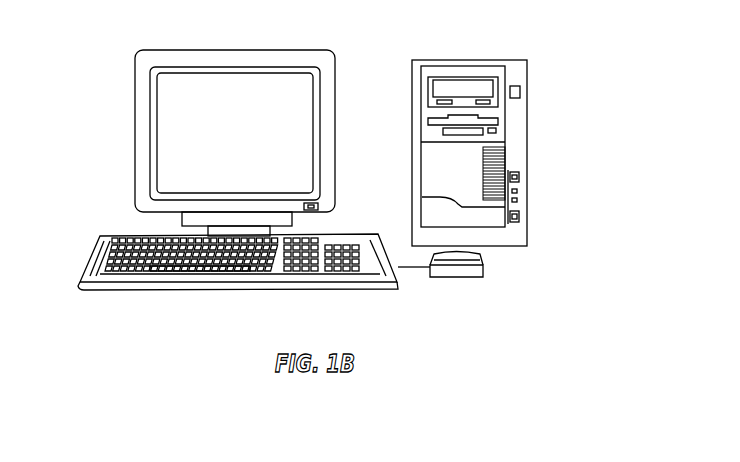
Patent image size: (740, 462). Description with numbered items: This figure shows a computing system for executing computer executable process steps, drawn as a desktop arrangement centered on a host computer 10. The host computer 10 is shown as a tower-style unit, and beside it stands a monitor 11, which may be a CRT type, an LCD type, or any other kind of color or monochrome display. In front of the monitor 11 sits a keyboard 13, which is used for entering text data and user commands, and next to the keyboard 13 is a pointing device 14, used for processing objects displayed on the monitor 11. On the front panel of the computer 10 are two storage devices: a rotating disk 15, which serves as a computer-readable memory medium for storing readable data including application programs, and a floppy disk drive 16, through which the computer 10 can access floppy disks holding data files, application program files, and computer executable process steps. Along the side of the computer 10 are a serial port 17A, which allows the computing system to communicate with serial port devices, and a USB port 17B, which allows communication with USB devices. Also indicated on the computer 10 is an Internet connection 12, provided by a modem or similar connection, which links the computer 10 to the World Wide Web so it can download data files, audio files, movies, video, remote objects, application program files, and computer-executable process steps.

The host computer 10 is at (514, 154).
The monitor 11 is at (187, 67).
The Internet connection 12 is at (520, 218).
The keyboard 13 is at (175, 290).
The pointing device 14 is at (460, 277).
The rotating disk 15 is at (437, 102).
The floppy disk drive 16 is at (442, 130).
The serial port 17A is at (520, 176).
The USB port 17B is at (518, 200).